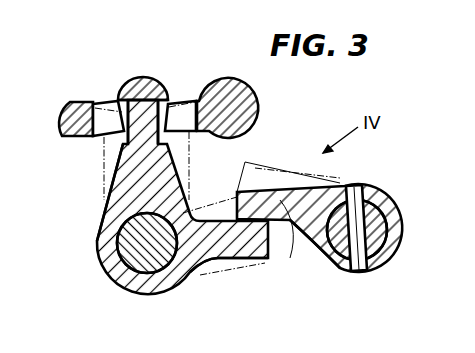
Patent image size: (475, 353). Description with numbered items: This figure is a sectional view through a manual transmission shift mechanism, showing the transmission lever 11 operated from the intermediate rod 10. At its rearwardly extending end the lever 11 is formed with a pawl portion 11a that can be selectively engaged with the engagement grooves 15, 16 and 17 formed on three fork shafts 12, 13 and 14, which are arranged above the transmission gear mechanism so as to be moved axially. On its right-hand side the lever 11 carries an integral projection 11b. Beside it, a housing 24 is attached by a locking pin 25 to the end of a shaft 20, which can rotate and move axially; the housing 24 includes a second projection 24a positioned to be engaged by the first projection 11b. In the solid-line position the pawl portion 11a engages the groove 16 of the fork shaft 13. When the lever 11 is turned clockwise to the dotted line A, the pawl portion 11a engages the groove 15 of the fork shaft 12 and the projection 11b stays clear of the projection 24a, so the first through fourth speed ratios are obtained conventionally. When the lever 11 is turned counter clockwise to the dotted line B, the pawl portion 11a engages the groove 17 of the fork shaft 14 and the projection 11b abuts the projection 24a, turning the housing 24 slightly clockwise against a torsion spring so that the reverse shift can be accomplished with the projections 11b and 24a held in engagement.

The intermediate rod 10 is at (137, 280).
The transmission lever 11 is at (108, 263).
The pawl portion 11a is at (122, 170).
The projection 11b is at (233, 272).
The fork shaft 12 is at (230, 82).
The fork shaft 13 is at (143, 82).
The fork shaft 14 is at (45, 93).
The engagement groove 15 is at (189, 101).
The engagement groove 16 is at (155, 98).
The engagement groove 17 is at (100, 102).
The shaft 20 is at (376, 218).
The housing 24 is at (399, 244).
The second projection 24a is at (270, 257).
The locking pin 25 is at (360, 272).
The dotted line A is at (203, 283).
The dotted line B is at (235, 206).